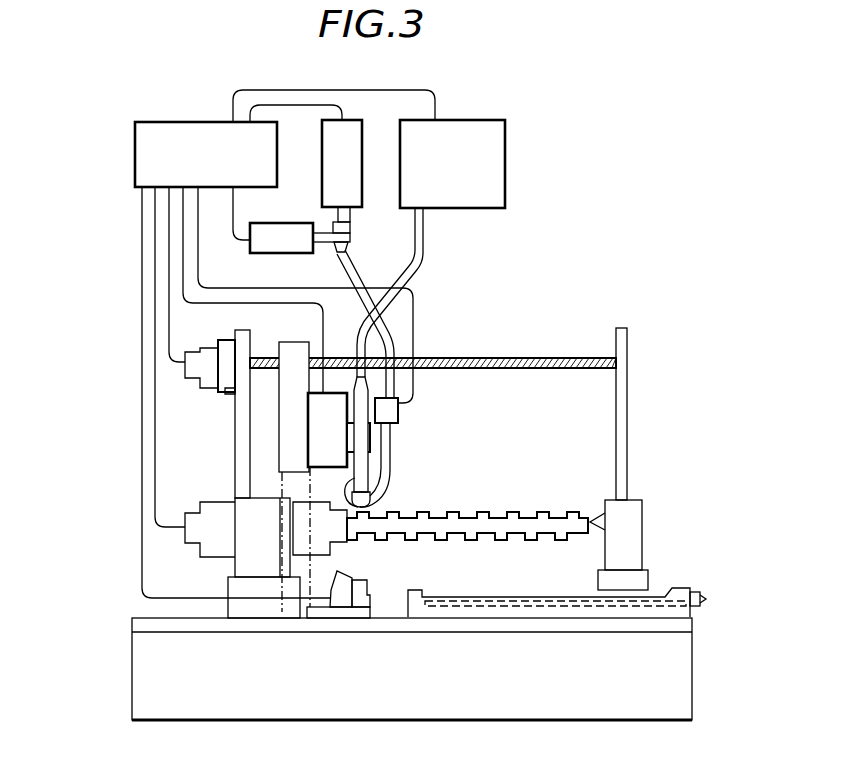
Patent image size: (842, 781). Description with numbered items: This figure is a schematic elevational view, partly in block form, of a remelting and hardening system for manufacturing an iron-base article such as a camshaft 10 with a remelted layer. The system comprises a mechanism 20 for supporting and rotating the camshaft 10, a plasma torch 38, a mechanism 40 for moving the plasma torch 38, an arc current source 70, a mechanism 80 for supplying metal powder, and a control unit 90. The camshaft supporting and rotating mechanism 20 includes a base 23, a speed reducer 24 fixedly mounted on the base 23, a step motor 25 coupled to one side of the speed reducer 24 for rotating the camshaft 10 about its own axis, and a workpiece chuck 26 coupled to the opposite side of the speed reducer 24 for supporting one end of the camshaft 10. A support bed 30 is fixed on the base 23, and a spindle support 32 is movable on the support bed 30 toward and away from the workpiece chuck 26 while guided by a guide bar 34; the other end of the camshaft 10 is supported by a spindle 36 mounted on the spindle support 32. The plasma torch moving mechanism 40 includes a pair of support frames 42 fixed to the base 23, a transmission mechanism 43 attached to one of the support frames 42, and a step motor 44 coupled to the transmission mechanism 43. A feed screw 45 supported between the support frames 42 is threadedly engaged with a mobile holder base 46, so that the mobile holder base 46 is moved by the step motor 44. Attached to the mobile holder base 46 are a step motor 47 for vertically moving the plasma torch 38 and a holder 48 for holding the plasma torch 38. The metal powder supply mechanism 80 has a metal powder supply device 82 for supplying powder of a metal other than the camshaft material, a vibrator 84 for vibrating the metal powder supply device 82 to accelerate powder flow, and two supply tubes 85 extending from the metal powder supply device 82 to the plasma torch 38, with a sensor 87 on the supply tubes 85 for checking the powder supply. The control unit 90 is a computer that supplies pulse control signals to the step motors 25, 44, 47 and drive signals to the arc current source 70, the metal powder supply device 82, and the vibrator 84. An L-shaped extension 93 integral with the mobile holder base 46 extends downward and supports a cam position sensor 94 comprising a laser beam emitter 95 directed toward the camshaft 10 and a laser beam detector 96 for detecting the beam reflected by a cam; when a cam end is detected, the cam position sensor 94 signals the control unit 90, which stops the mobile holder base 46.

The camshaft 10 is at (467, 525).
The camshaft supporting and rotating mechanism 20 is at (165, 563).
The base 23 is at (417, 703).
The speed reducer 24 is at (250, 558).
The step motor 25 is at (215, 513).
The workpiece chuck 26 is at (320, 557).
The support bed 30 is at (600, 612).
The spindle support 32 is at (632, 520).
The guide bar 34 is at (502, 607).
The spindle 36 is at (598, 527).
The plasma torch 38 is at (367, 469).
The plasma torch moving mechanism 40 is at (195, 428).
The support frames 42 is at (235, 400).
The transmission mechanism 43 is at (230, 345).
The step motor 44 is at (197, 355).
The feed screw 45 is at (265, 357).
The mobile holder base 46 is at (288, 417).
The step motor 47 is at (315, 443).
The holder 48 is at (367, 438).
The arc current source 70 is at (477, 115).
The metal powder supply mechanism 80 is at (358, 110).
The metal powder supply device 82 is at (333, 166).
The vibrator 84 is at (288, 233).
The supply tubes 85 is at (393, 375).
The sensor 87 is at (398, 418).
The control unit 90 is at (173, 128).
The L-shaped extension 93 is at (355, 610).
The cam position sensor 94 is at (372, 590).
The laser beam emitter 95 is at (343, 583).
The laser beam detector 96 is at (370, 597).